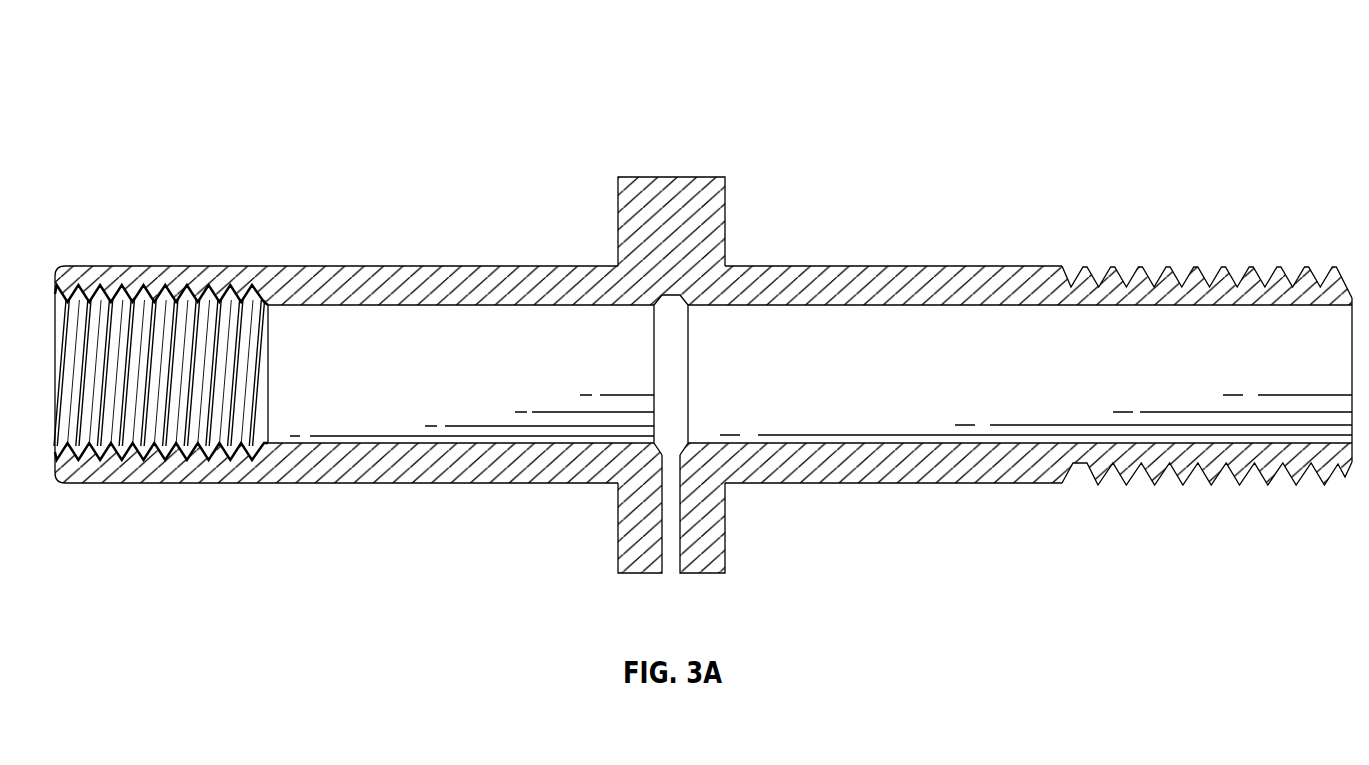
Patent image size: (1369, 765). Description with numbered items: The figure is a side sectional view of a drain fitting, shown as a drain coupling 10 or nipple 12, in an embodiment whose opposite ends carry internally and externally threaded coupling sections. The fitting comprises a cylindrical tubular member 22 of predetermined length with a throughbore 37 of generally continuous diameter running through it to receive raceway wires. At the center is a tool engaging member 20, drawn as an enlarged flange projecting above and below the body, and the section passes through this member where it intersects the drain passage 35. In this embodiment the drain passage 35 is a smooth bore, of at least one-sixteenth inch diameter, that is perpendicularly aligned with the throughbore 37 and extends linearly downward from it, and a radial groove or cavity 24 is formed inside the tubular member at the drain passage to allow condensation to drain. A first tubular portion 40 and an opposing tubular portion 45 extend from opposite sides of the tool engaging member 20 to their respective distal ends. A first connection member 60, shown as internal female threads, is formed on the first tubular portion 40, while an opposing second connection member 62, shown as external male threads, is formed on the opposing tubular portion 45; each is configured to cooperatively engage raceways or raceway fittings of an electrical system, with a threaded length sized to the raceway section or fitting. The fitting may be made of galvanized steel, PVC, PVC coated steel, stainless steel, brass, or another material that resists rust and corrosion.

The drain coupling 10 is at (702, 351).
The nipple 12 is at (702, 351).
The tool engaging member 20 is at (670, 177).
The cylindrical tubular member 22 is at (400, 266).
The radial groove or cavity 24 is at (668, 376).
The drain passage 35 is at (675, 562).
The throughbore 37 is at (970, 330).
The first tubular portion 40 is at (470, 266).
The opposing tubular portion 45 is at (893, 266).
The first connection member 60 is at (212, 266).
The opposing second connection member 62 is at (1255, 266).